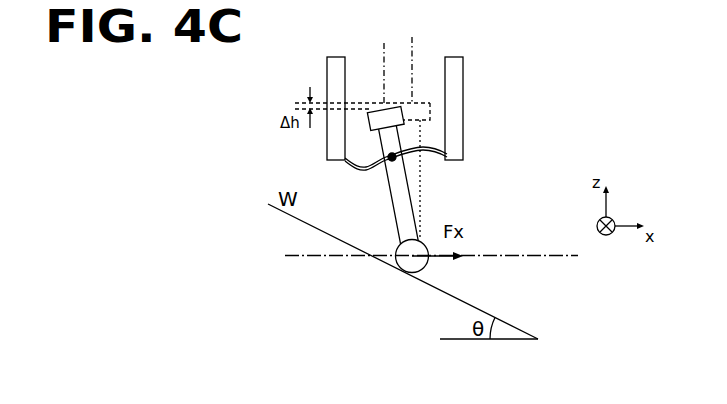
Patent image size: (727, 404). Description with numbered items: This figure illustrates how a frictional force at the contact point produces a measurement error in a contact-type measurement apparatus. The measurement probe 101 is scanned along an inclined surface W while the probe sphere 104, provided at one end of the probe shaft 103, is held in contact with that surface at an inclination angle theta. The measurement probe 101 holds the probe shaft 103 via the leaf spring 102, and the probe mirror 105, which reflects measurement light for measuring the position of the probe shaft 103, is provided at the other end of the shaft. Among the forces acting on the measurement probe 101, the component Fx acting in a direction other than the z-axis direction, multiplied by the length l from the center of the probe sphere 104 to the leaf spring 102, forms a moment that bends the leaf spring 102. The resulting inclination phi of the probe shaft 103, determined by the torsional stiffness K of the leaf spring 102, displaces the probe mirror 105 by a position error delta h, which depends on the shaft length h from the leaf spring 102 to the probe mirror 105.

The measurement probe 101 is at (463, 93).
The leaf spring 102 is at (428, 150).
The probe shaft 103 is at (387, 178).
The probe sphere 104 is at (428, 262).
The probe mirror 105 is at (378, 107).